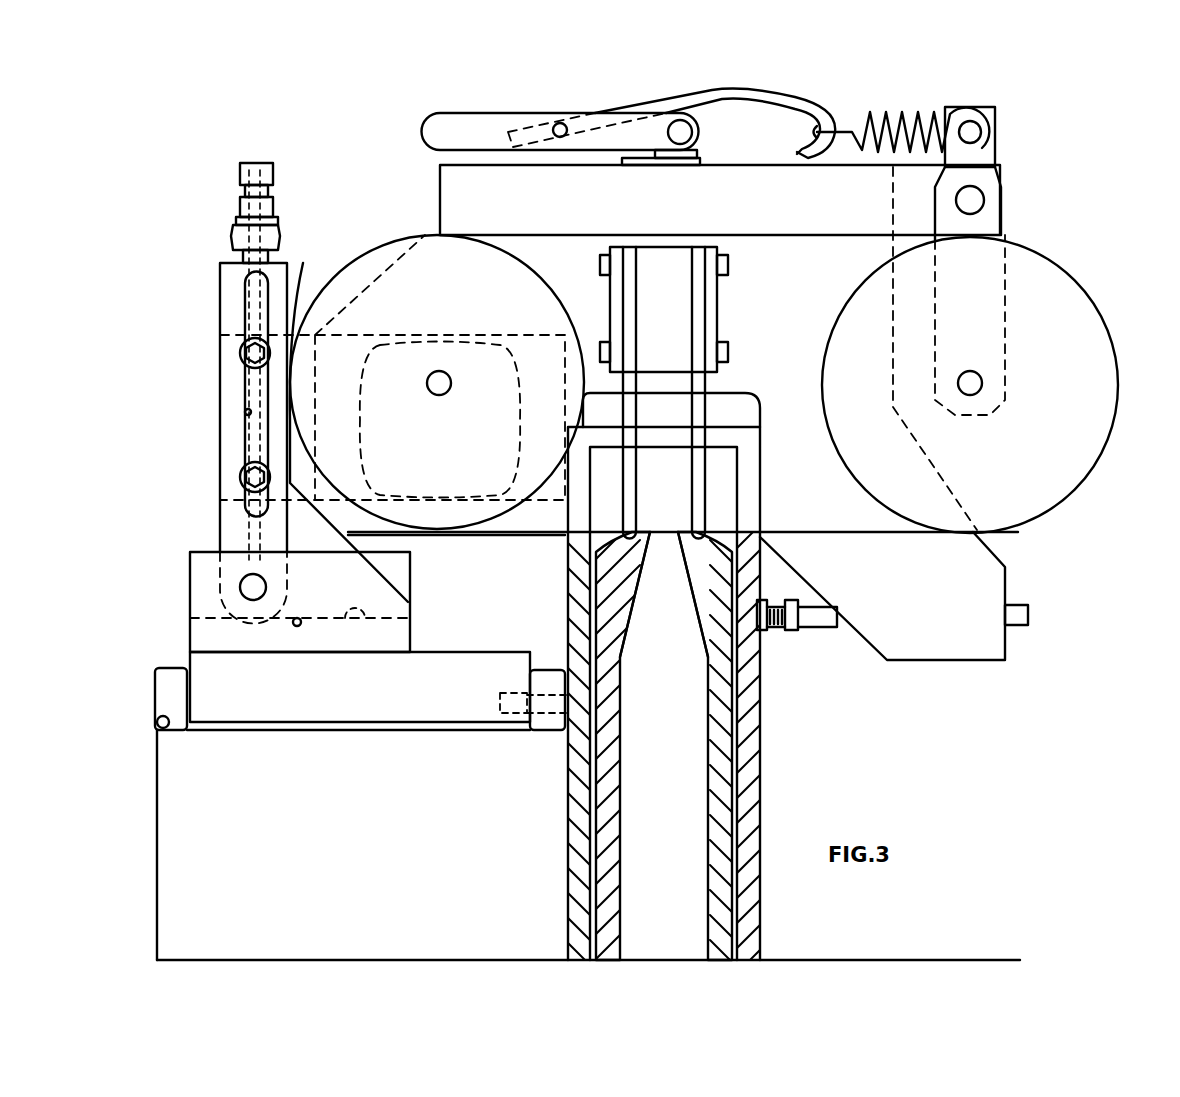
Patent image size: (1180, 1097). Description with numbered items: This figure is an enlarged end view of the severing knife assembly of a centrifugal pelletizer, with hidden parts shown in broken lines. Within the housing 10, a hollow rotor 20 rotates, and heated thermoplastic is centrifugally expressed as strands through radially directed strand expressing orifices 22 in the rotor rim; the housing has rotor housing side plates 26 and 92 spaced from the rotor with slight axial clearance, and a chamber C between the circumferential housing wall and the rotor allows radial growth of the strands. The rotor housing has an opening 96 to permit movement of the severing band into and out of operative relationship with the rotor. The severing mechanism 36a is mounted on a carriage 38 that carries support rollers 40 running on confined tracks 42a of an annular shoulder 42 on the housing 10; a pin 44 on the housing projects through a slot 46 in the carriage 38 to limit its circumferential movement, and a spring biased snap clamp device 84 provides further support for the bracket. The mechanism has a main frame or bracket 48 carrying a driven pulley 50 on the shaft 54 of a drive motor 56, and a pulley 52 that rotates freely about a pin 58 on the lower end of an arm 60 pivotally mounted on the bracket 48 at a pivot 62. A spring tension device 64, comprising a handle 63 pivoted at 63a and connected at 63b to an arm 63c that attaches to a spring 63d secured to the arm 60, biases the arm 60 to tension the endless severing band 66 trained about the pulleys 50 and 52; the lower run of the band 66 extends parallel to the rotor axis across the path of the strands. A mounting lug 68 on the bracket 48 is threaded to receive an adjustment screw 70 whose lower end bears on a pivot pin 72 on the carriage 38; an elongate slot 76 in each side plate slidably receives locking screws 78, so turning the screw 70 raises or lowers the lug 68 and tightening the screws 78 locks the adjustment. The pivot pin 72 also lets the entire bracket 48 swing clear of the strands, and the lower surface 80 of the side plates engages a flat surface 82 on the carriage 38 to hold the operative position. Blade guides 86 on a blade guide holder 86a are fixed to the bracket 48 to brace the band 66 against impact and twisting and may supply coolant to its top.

The housing 10 is at (770, 749).
The hollow rotor 20 is at (718, 682).
The strand expressing orifices 22 is at (678, 530).
The side wall 26 is at (752, 790).
The severing mechanism 36a is at (381, 235).
The carriage 38 is at (434, 662).
The support rollers 40 is at (158, 672).
The annular shoulder 42 is at (160, 790).
The confined tracks 42a is at (158, 723).
The pin 44 is at (500, 712).
The slot 46 is at (516, 692).
The main frame or bracket 48 is at (572, 213).
The driven pulley 50 is at (558, 312).
The pulley 52 is at (842, 326).
The shaft 54 is at (440, 396).
The drive motor 56 is at (520, 392).
The pin 58 is at (985, 383).
The arm 60 is at (1002, 238).
The pivot 62 is at (985, 200).
The handle 63 is at (458, 122).
The handle pivot 63a is at (681, 145).
The connection 63b is at (560, 122).
The arm 63c is at (768, 107).
The spring 63d is at (888, 110).
The spring tension device 64 is at (849, 146).
The endless severing band 66 is at (814, 530).
The mounting lug 68 is at (292, 334).
The adjustment screw 70 is at (236, 258).
The pivot pin 72 is at (240, 588).
The elongate slot 76 is at (245, 412).
The locking screws 78 is at (240, 353).
The lower surface 80 is at (300, 618).
The flat surface 82 is at (363, 629).
The spring biased snap clamp device 84 is at (838, 628).
The blade guides 86 is at (694, 498).
The blade guide holder 86a is at (712, 300).
The rotor housing side plate 92 is at (576, 848).
The opening 96 is at (568, 556).
The chamber C is at (736, 396).